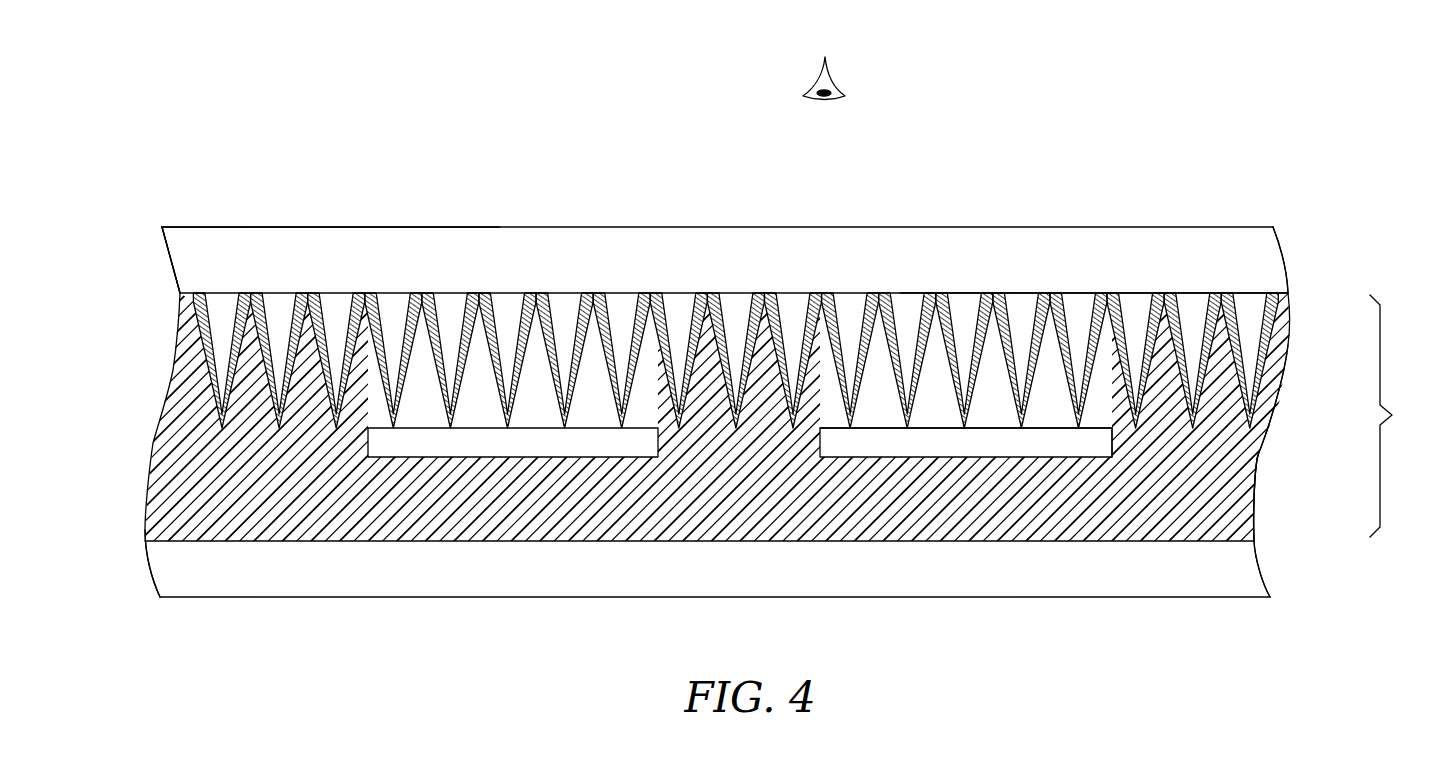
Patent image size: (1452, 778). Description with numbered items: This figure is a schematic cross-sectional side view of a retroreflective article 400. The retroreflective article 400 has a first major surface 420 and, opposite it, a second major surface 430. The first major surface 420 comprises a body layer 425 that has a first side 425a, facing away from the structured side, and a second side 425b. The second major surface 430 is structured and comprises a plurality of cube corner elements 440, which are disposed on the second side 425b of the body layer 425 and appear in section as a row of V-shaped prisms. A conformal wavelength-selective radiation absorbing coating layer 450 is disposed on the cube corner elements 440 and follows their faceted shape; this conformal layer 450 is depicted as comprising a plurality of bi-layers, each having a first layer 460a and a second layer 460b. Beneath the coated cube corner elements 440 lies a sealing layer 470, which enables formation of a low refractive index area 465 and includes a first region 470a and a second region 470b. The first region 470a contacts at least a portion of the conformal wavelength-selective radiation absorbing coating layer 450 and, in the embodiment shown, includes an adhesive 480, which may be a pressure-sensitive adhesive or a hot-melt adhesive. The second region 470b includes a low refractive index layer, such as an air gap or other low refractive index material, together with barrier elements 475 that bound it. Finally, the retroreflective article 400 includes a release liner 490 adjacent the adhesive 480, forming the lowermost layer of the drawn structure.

The retroreflective article 400 is at (1262, 160).
The first major surface 420 is at (755, 227).
The body layer 425 is at (188, 262).
The first side of body layer 425a is at (232, 227).
The second side of body layer 425b is at (1081, 293).
The second major surface 430 is at (1302, 303).
The cube corner elements 440 is at (728, 287).
The conformal wavelength-selective radiation absorbing coating layer 450 is at (197, 322).
The first layer 460a is at (1277, 333).
The second layer 460b is at (1258, 383).
The low refractive index area 465 is at (595, 383).
The sealing layer 470 is at (1346, 418).
The first region of sealing layer 470a is at (1161, 400).
The second region of sealing layer 470b is at (995, 395).
The barrier elements 475 is at (490, 442).
The adhesive 480 is at (177, 460).
The release liner 490 is at (177, 571).